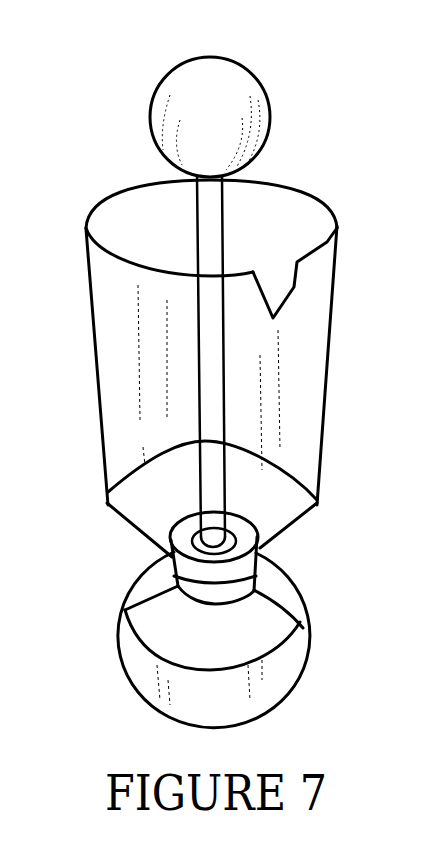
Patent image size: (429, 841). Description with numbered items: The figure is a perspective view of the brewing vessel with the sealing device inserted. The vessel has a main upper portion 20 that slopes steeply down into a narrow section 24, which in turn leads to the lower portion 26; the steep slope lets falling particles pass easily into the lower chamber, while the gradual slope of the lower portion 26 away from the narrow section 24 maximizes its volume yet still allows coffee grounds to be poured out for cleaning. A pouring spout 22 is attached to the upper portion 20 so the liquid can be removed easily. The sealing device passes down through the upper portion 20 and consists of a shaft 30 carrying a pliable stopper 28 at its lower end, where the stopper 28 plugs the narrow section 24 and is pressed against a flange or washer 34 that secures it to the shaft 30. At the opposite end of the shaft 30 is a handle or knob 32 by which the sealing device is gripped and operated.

The upper portion 20 is at (317, 417).
The pouring spout 22 is at (295, 290).
The narrow section 24 is at (257, 573).
The lower portion 26 is at (275, 677).
The stopper 28 is at (200, 585).
The shaft 30 is at (215, 227).
The handle 32 is at (243, 87).
The flange or washer 34 is at (196, 538).